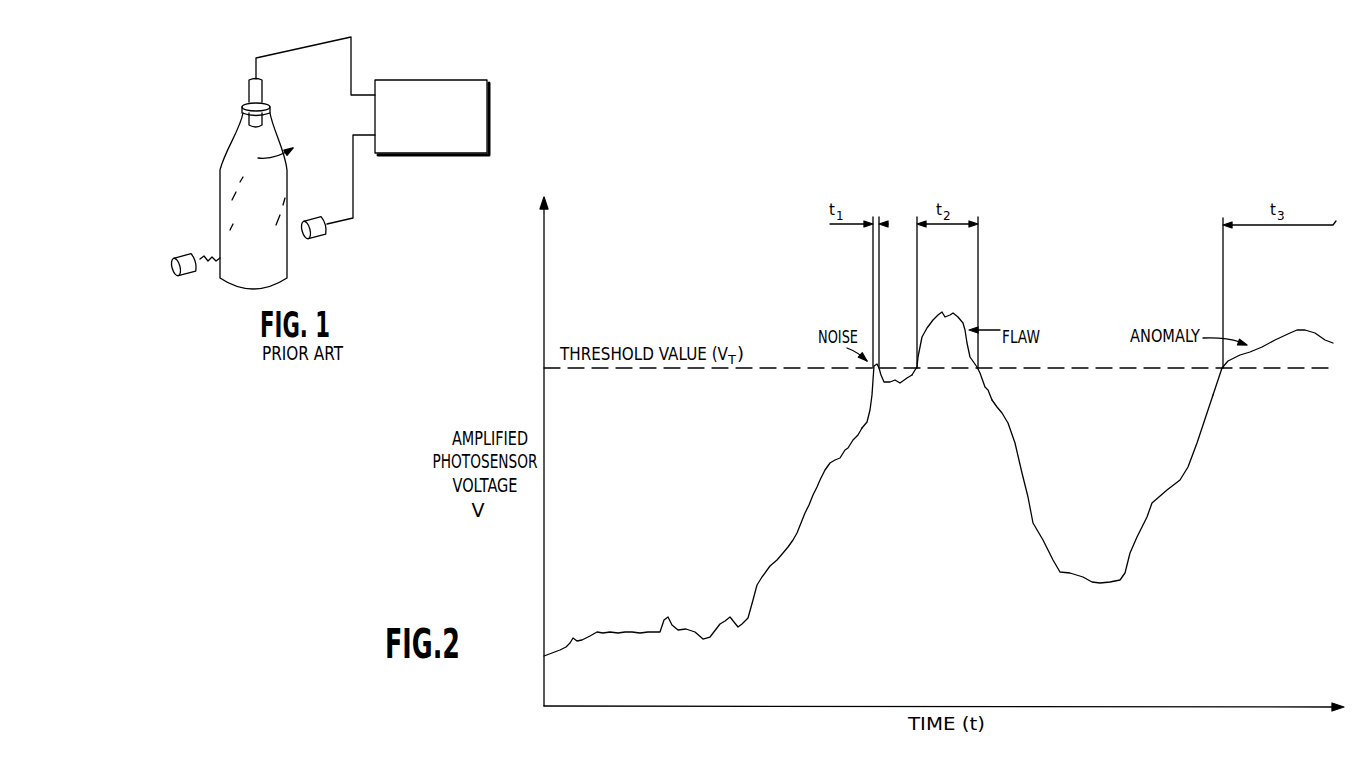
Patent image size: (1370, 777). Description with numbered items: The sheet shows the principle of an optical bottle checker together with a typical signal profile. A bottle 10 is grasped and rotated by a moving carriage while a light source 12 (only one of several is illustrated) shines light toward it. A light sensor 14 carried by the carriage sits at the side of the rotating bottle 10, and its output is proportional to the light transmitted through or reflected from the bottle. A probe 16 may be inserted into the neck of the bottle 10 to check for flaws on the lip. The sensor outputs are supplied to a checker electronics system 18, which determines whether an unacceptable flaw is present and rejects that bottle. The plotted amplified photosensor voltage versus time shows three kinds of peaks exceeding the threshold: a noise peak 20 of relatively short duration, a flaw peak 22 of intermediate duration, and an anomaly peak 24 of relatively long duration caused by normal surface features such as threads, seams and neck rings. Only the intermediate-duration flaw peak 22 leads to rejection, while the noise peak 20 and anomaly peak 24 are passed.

In FIG. 1, the bottle 10 is at (224, 172).
In FIG. 1, the light source 12 is at (181, 278).
In FIG. 1, the light sensor 14 is at (320, 240).
In FIG. 1, the probe 16 is at (249, 85).
In FIG. 1, the checker electronics system 18 is at (445, 80).
In FIG. 2, the noise peak 20 is at (883, 392).
In FIG. 2, the flaw peak 22 is at (948, 384).
In FIG. 2, the anomaly peak 24 is at (1281, 386).